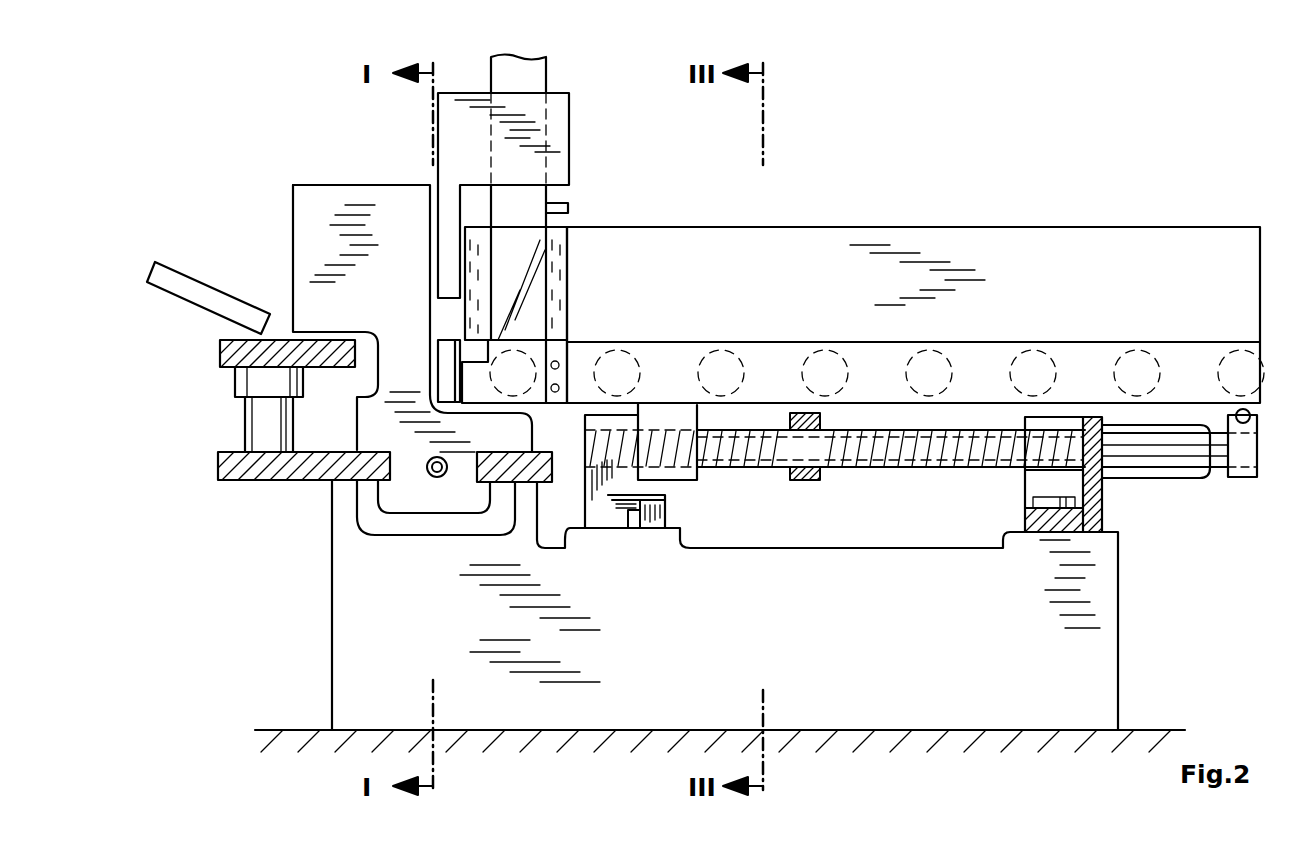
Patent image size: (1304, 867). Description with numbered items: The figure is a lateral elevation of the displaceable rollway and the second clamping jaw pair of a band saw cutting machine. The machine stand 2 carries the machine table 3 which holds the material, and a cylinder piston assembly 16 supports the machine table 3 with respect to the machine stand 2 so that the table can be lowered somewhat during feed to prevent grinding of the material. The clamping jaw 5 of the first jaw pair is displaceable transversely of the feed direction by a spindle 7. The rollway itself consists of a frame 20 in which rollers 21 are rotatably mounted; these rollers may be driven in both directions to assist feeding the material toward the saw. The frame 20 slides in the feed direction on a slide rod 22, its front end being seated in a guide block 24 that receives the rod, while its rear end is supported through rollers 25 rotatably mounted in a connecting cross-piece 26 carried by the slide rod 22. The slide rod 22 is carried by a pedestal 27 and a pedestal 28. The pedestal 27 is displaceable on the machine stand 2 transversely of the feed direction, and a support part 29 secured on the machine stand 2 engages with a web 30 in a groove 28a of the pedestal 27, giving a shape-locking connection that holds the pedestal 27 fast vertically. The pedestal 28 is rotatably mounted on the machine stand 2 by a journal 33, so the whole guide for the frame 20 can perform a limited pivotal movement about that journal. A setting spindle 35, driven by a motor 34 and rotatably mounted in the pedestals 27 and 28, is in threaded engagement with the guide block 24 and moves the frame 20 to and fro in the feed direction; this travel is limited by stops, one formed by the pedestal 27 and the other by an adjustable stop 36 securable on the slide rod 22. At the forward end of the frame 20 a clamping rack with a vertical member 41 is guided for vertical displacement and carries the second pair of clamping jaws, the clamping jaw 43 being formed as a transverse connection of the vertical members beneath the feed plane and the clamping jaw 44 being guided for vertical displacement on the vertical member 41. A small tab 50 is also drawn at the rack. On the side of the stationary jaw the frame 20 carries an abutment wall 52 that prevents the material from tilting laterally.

The machine stand 2 is at (332, 600).
The machine table 3 is at (240, 352).
The clamping jaw 5 is at (318, 195).
The spindle 7 is at (432, 475).
The cylinder piston assembly 16 is at (258, 425).
The frame 20 is at (985, 355).
The rollers 21 is at (1130, 360).
The slide rod 22 is at (1045, 435).
The guide block 24 is at (672, 400).
The rollers 25 is at (1243, 408).
The connecting cross-piece 26 is at (1243, 478).
The pedestal 27 is at (595, 510).
The pedestal 28 is at (1095, 501).
The groove 28a is at (615, 508).
The support part 29 is at (665, 512).
The web 30 is at (650, 512).
The journal 33 is at (1060, 522).
The motor 34 is at (1175, 430).
The setting spindle 35 is at (880, 440).
The adjustable stop 36 is at (805, 413).
The vertical member 41 is at (527, 240).
The clamping jaw 43 is at (440, 375).
The clamping jaw 44 is at (440, 289).
The stop tab 50 is at (548, 207).
The abutment wall 52 is at (1165, 245).